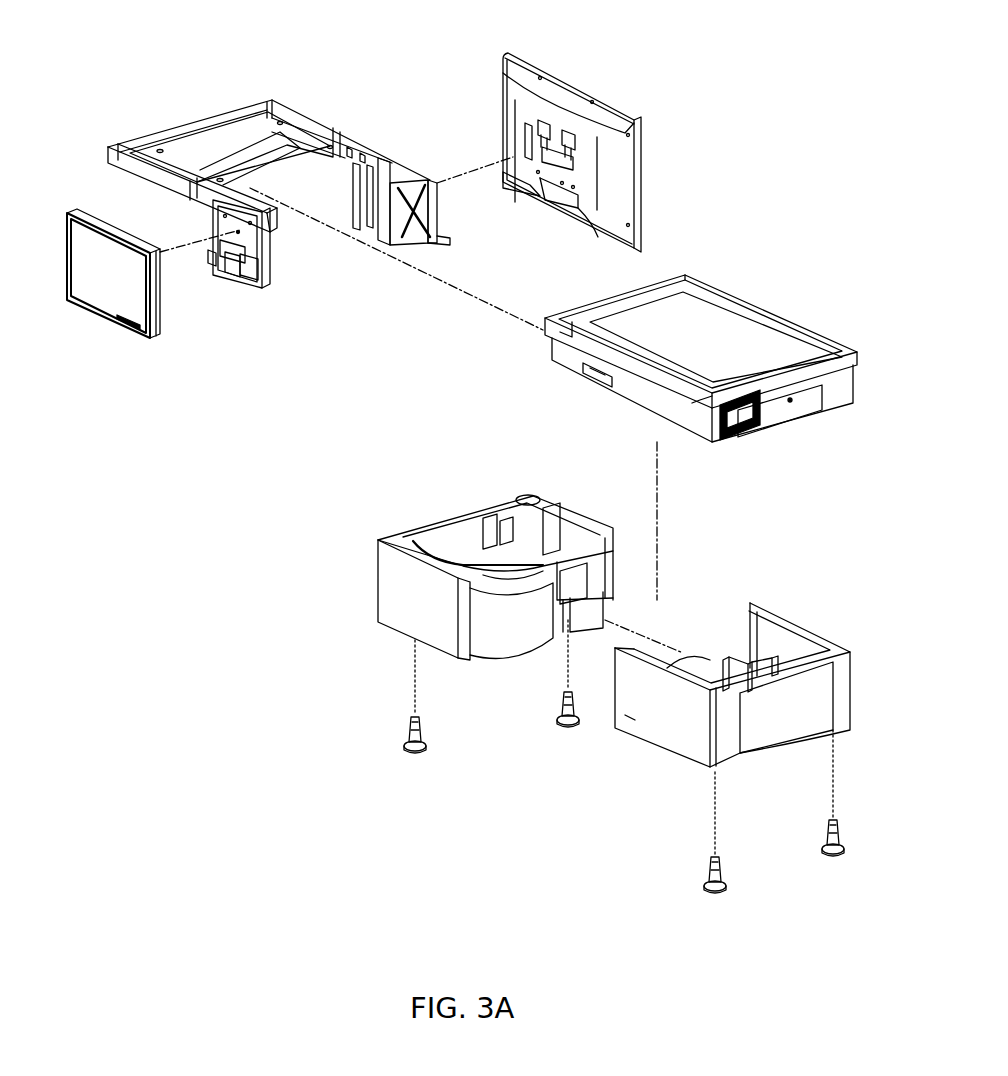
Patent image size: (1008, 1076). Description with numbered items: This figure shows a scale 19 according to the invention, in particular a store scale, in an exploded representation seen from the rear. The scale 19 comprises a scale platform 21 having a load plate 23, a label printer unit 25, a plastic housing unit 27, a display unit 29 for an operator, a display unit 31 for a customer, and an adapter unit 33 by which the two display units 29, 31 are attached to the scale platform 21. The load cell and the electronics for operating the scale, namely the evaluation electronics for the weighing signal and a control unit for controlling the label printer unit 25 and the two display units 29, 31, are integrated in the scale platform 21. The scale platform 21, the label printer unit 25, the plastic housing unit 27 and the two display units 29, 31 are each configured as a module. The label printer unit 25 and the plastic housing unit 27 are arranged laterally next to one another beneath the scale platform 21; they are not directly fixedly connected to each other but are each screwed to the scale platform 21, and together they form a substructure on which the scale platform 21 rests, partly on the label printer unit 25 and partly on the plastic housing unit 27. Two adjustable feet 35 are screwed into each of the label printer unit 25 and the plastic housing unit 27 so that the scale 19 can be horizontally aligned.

The scale 19 is at (233, 468).
The scale platform 21 is at (553, 350).
The load plate 23 is at (743, 297).
The label printer unit 25 is at (377, 588).
The plastic housing unit 27 is at (647, 735).
The display unit for an operator 29 is at (582, 83).
The display unit for a customer 31 is at (112, 315).
The adapter unit 33 is at (313, 120).
The adjustable feet 35 is at (405, 745).